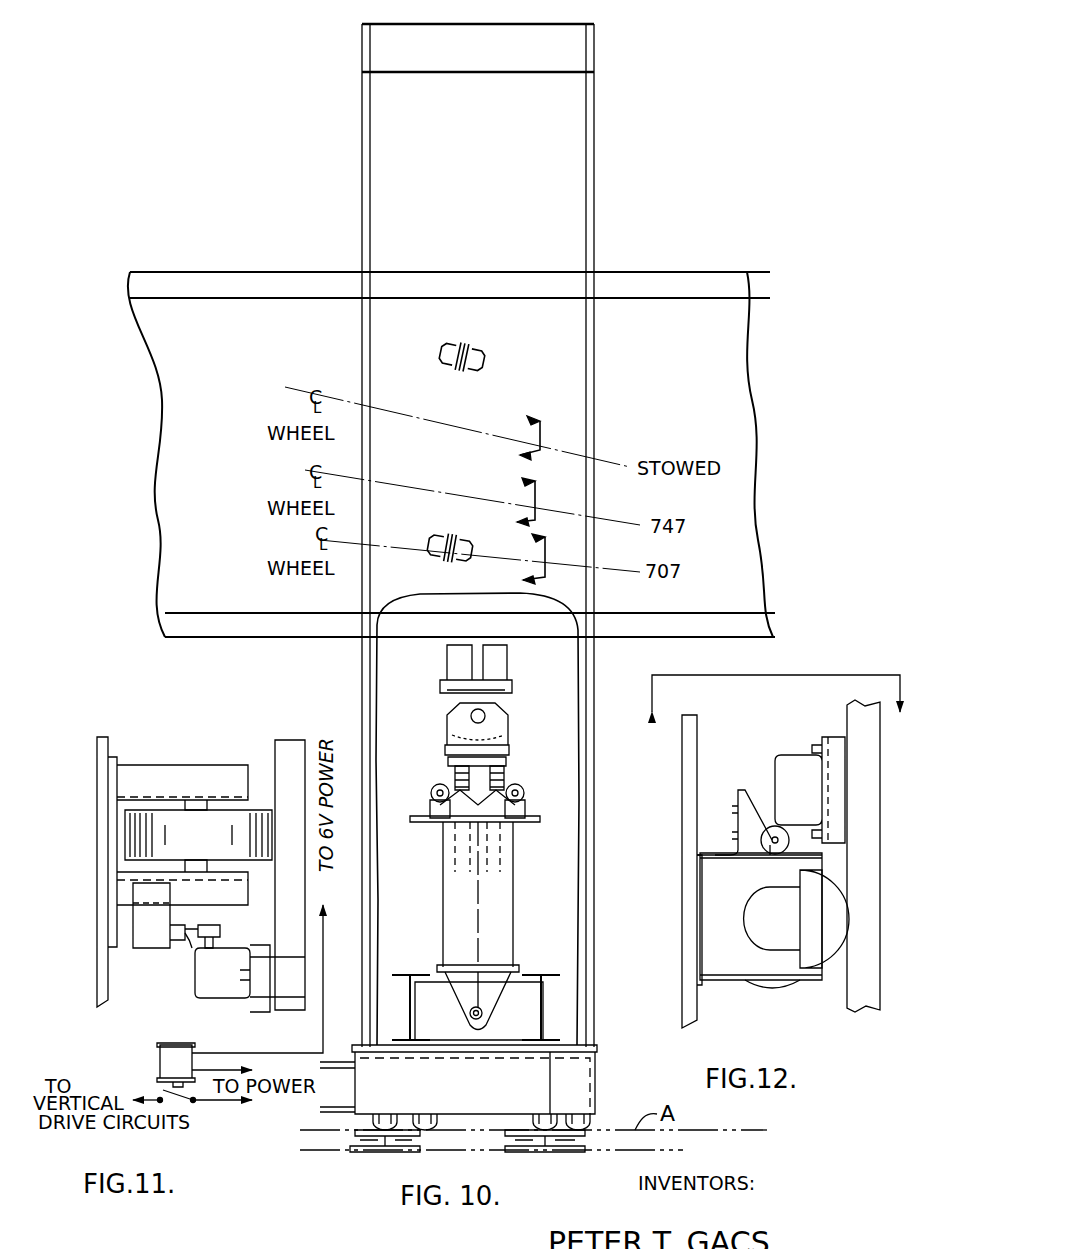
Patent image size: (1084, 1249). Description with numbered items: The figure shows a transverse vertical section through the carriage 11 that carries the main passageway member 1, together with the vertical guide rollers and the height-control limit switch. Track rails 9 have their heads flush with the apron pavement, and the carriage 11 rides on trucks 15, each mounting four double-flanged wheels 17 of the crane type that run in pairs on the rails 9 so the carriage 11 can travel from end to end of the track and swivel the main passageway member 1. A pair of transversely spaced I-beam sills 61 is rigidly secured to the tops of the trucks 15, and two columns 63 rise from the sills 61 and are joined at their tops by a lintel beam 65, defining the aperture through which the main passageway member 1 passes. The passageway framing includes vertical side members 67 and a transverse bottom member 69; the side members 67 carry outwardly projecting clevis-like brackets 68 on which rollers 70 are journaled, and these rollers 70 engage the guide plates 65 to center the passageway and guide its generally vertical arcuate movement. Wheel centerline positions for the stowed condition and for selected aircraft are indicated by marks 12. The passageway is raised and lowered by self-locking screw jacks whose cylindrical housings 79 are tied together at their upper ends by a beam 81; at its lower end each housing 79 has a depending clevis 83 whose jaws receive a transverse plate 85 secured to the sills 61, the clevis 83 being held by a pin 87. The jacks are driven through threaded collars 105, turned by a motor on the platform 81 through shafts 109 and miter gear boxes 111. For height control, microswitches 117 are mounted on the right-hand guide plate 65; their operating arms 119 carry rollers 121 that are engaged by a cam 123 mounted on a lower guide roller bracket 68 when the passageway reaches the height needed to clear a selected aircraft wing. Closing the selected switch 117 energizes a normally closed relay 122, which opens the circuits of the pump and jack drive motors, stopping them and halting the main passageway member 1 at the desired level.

In FIG. 10, the main passageway member 1 is at (293, 272).
In FIG. 10, the track rails 9 is at (386, 1152).
In FIG. 10, the carriage 11 is at (345, 210).
In FIG. 12, the carriage 11 is at (776, 707).
In FIG. 10, the wheel centerline position marks 12 is at (511, 493).
In FIG. 10, the trucks 15 is at (458, 1096).
In FIG. 10, the double-flanged wheels 17 is at (372, 1122).
In FIG. 11, the double-flanged wheels 17 is at (299, 1129).
In FIG. 10, the I-beam sills 61 is at (416, 1010).
In FIG. 10, the columns 63 is at (598, 193).
In FIG. 10, the lintel beam 65 is at (598, 48).
In FIG. 11, the lintel beam 65 is at (287, 740).
In FIG. 12, the lintel beam 65 is at (847, 711).
In FIG. 11, the vertical side member 67 is at (97, 856).
In FIG. 12, the vertical side member 67 is at (682, 776).
In FIG. 10, the clevis-like brackets 68 is at (455, 346).
In FIG. 11, the clevis-like brackets 68 is at (120, 768).
In FIG. 12, the clevis-like brackets 68 is at (742, 972).
In FIG. 10, the transverse bottom member 69 is at (500, 665).
In FIG. 10, the rollers 70 is at (470, 343).
In FIG. 11, the rollers 70 is at (250, 790).
In FIG. 12, the rollers 70 is at (765, 990).
In FIG. 10, the cylindrical housing 79 is at (445, 903).
In FIG. 10, the beam 81 is at (530, 822).
In FIG. 10, the depending clevis 83 is at (492, 996).
In FIG. 10, the transverse plates 85 is at (451, 1026).
In FIG. 10, the pins 87 is at (480, 1035).
In FIG. 10, the threaded collars 105 is at (440, 785).
In FIG. 10, the shafts 109 is at (452, 790).
In FIG. 10, the miter gear boxes 111 is at (432, 812).
In FIG. 11, the microswitches 117 is at (245, 1000).
In FIG. 12, the microswitches 117 is at (812, 801).
In FIG. 11, the operating arms 119 is at (200, 935).
In FIG. 12, the operating arms 119 is at (775, 826).
In FIG. 11, the rollers 121 is at (220, 934).
In FIG. 12, the rollers 121 is at (768, 857).
In FIG. 11, the relay 122 is at (160, 1055).
In FIG. 12, the cam 123 is at (740, 825).